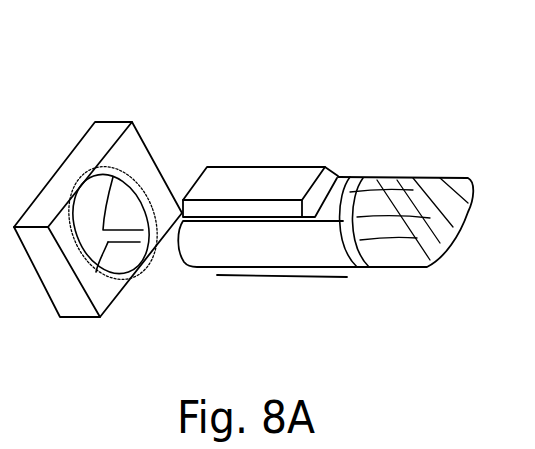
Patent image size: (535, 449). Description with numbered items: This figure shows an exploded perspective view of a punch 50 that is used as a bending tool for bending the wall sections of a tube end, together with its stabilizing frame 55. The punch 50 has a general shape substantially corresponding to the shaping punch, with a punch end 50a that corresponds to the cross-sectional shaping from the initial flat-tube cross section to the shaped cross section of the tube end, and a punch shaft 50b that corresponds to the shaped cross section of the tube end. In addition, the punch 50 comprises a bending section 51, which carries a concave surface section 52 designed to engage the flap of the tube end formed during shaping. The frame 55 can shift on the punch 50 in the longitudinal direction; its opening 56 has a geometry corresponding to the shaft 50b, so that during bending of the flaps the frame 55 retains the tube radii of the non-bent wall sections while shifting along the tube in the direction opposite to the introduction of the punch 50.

The punch 50 is at (359, 85).
The punch end 50a is at (398, 257).
The punch shaft 50b is at (263, 247).
The bending section 51 is at (250, 183).
The concave surface section 52 is at (327, 188).
The frame 55 is at (66, 178).
The opening 56 is at (130, 192).